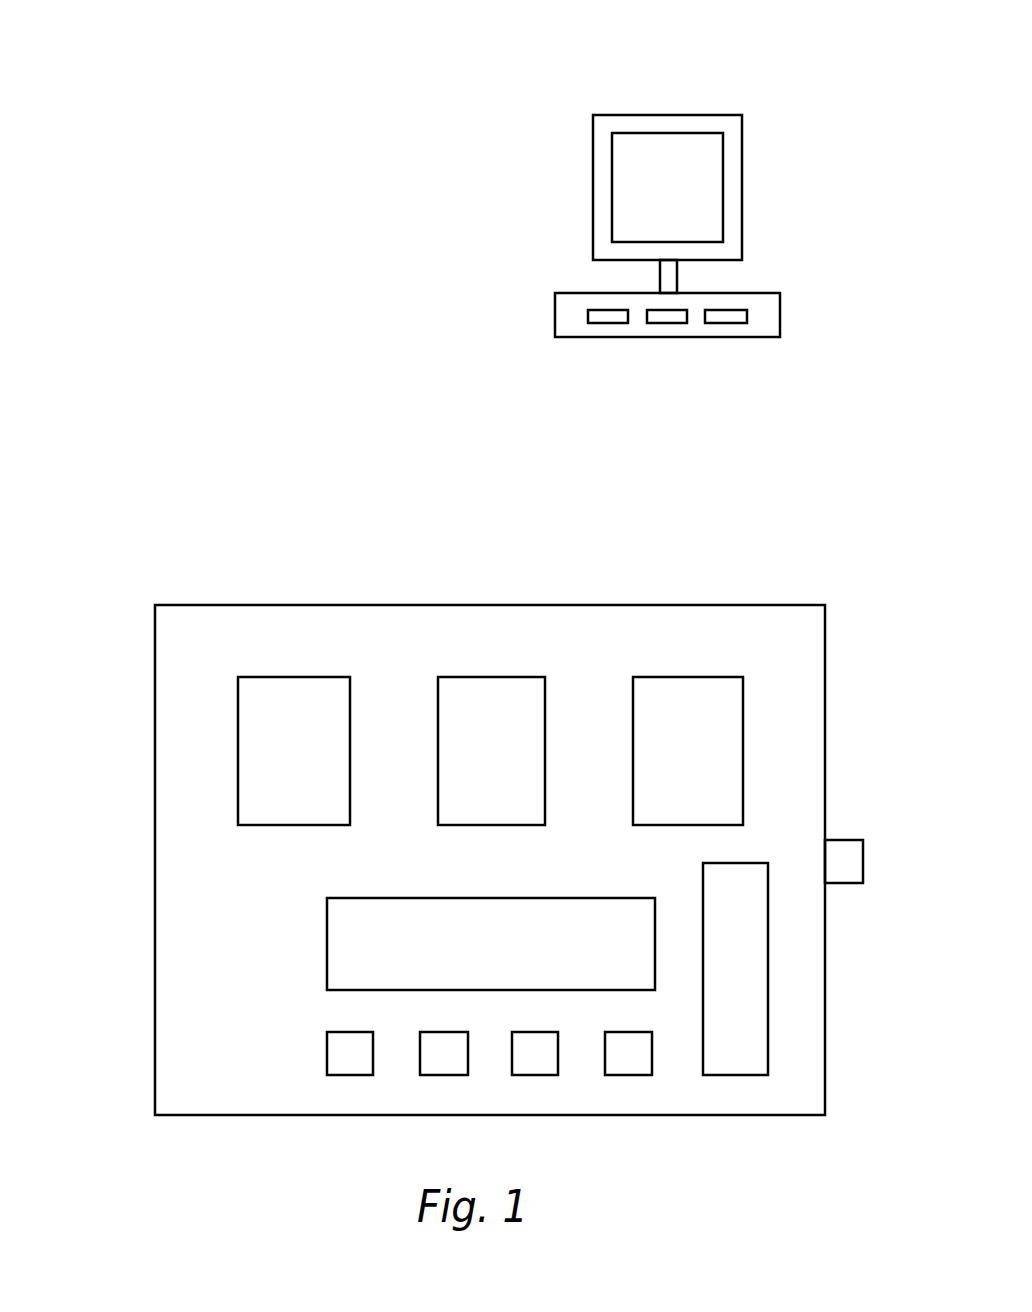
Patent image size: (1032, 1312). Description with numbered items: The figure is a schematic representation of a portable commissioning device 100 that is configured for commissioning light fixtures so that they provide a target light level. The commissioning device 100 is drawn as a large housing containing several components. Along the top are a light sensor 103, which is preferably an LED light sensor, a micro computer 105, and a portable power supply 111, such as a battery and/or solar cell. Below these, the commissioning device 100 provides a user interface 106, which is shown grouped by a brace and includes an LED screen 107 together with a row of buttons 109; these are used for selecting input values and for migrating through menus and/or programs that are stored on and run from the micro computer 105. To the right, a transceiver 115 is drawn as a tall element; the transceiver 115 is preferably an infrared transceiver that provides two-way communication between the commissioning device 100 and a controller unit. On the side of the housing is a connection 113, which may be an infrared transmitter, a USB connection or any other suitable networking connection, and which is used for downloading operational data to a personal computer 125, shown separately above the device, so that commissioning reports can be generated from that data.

The portable commissioning device 100 is at (128, 490).
The light sensor 103 is at (292, 677).
The micro computer 105 is at (482, 677).
The user interface 106 is at (441, 1015).
The LED screen 107 is at (450, 898).
The buttons 109 is at (347, 1075).
The portable power supply 111 is at (670, 677).
The connection 113 is at (863, 862).
The transceiver 115 is at (768, 965).
The personal computer 125 is at (778, 88).